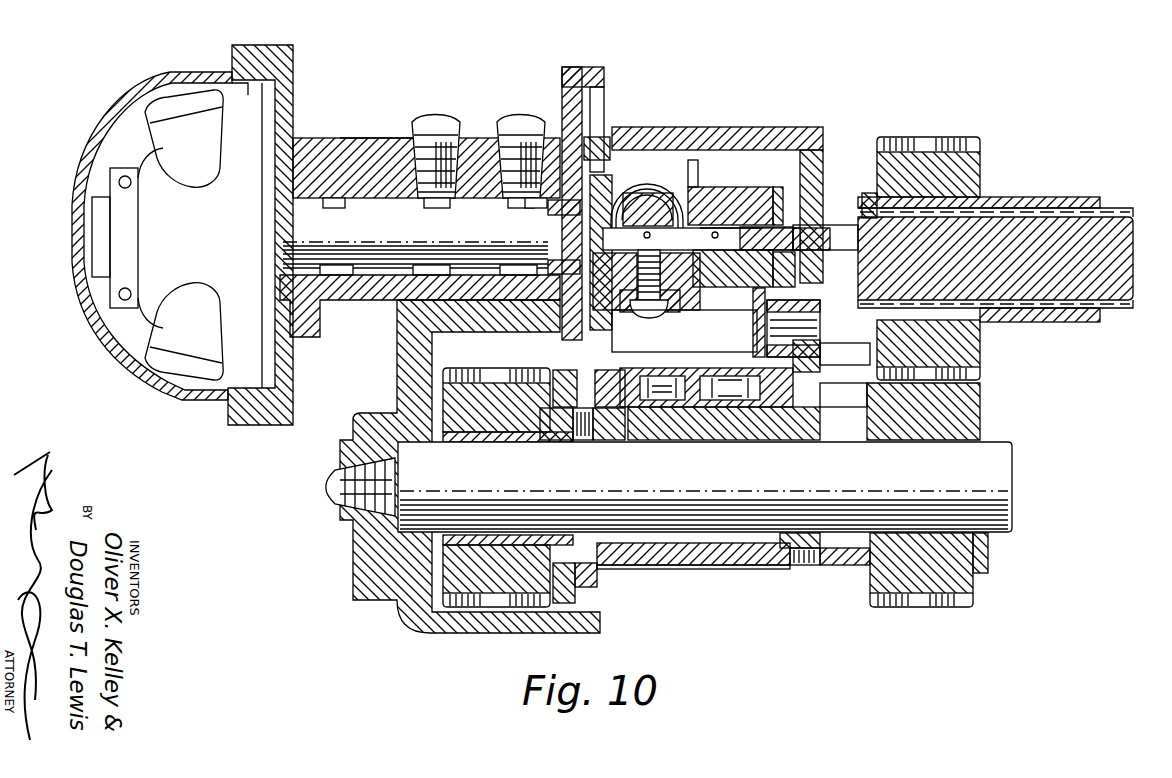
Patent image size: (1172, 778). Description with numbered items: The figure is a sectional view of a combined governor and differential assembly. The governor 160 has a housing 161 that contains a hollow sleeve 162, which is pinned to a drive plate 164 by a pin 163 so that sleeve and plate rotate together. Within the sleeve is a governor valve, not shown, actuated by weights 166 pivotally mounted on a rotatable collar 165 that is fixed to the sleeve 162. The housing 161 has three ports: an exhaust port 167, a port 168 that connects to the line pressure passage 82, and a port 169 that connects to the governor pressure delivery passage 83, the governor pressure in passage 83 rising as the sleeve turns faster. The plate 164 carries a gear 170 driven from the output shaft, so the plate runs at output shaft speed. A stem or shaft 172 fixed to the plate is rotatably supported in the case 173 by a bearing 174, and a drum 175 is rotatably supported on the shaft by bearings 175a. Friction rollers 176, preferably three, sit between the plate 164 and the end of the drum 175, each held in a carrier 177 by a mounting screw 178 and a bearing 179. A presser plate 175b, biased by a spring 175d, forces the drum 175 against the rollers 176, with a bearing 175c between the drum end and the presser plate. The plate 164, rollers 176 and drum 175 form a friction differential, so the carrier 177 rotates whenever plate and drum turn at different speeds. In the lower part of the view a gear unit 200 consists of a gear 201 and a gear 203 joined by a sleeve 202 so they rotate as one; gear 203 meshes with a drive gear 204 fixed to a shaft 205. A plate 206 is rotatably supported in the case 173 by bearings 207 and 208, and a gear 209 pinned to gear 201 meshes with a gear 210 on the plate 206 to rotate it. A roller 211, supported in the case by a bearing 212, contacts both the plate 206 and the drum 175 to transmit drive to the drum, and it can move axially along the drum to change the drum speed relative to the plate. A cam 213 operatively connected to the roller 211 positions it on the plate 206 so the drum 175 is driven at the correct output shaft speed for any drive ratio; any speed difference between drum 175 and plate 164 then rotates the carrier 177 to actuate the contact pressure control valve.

The weights 166 is at (176, 118).
The rotatable collar 165 is at (110, 240).
The exhaust port 167 is at (330, 196).
The governor 160 is at (363, 142).
The housing 161 is at (388, 142).
The line pressure passage 82 is at (436, 116).
The governor pressure delivery passage 83 is at (518, 74).
The port 168 is at (447, 206).
The port 169 is at (528, 208).
The pin 163 is at (588, 236).
The sleeve 162 is at (368, 282).
The drive plate 164 is at (640, 163).
The gear 170 is at (596, 132).
The case 173 is at (727, 138).
The carrier 177 is at (700, 196).
The bearing 175c is at (795, 185).
The drum 175 is at (758, 183).
The stem or shaft 172 is at (795, 230).
The bearing 174 is at (822, 200).
The bearings 175a is at (733, 224).
The spring 175d is at (708, 251).
The presser plate 175b is at (797, 268).
The friction rollers 176 is at (660, 160).
The bearing 179 is at (634, 314).
The mounting screw 178 is at (655, 315).
The roller 211 is at (758, 336).
The drive gear 204 is at (905, 156).
The cam 213 is at (866, 362).
The shaft 205 is at (1112, 218).
The gear unit 200 is at (688, 563).
The sleeve 202 is at (764, 568).
The gear 201 is at (497, 597).
The gear 209 is at (615, 588).
The gear 203 is at (915, 608).
The bearing 207 is at (757, 410).
The bearing 208 is at (730, 410).
The bearing 212 is at (824, 366).
The gear 210 is at (820, 395).
The plate 206 is at (627, 410).